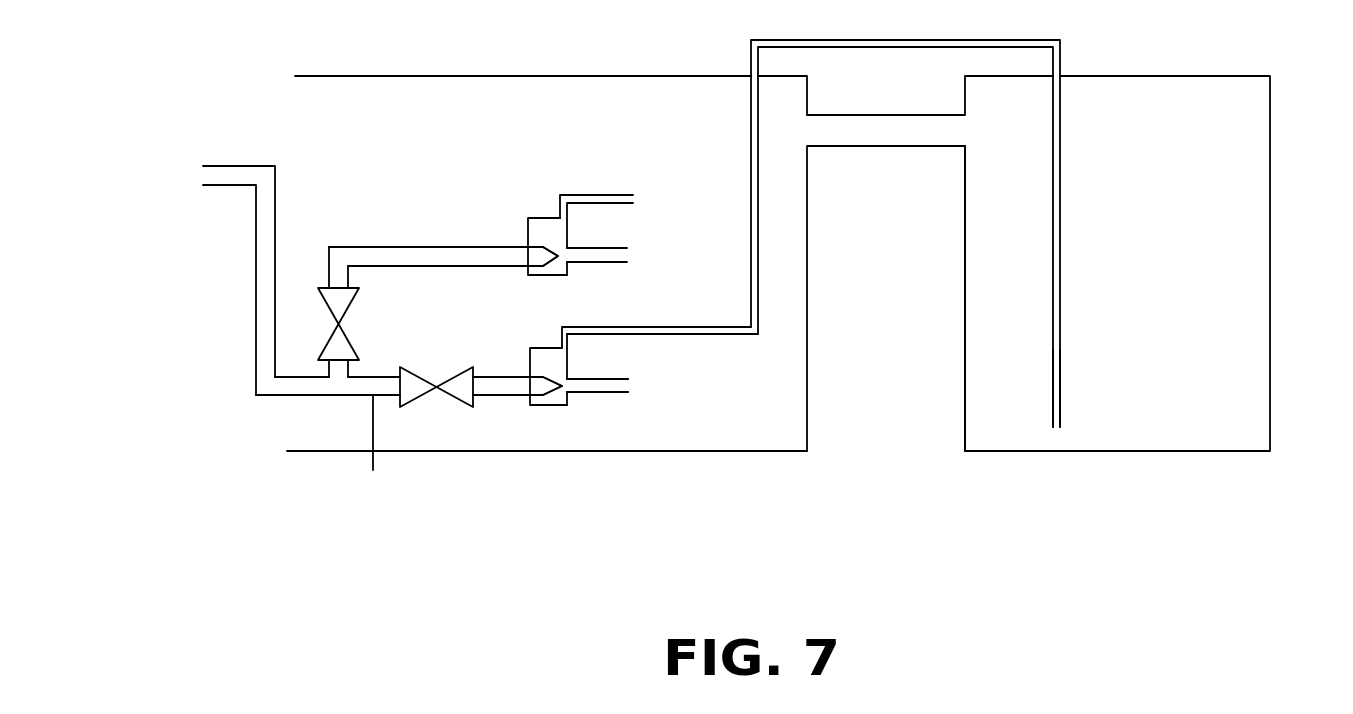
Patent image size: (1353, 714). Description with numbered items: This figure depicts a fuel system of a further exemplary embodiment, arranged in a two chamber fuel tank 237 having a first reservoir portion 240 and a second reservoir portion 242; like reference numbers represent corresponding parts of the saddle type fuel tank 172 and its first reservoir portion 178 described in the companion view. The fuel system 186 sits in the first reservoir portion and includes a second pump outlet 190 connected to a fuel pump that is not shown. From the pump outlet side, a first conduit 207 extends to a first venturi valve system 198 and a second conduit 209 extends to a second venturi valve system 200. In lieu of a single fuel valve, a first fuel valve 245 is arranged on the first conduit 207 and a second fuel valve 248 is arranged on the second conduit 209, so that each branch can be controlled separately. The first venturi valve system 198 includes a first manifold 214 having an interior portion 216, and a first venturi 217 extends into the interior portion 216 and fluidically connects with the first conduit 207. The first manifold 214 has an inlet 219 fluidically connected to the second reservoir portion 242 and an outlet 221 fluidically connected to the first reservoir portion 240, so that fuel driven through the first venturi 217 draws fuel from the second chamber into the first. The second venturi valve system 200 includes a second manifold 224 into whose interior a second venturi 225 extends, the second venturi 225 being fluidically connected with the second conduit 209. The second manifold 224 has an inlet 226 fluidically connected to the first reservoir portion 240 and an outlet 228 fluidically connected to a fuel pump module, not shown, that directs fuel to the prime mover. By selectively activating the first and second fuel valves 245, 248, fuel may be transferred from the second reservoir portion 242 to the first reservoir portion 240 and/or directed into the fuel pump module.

The saddle type fuel tank 172 is at (1078, 480).
The first reservoir portion 178 is at (383, 433).
The fuel system 186 is at (347, 418).
The second pump outlet 190 is at (232, 172).
The first venturi valve system 198 is at (591, 420).
The second venturi valve system 200 is at (599, 237).
The first conduit 207 is at (373, 470).
The second conduit 209 is at (453, 258).
The first manifold 214 is at (569, 406).
The interior portion 216 is at (530, 356).
The first venturi 217 is at (560, 387).
The inlet 219 is at (608, 335).
The outlet 221 is at (617, 393).
The second manifold 224 is at (528, 230).
The second venturi 225 is at (559, 268).
The inlet 226 is at (597, 195).
The outlet 228 is at (600, 248).
The two chamber fuel tank 237 is at (899, 497).
The first reservoir portion 240 is at (782, 325).
The second reservoir portion 242 is at (1022, 428).
The first fuel valve 245 is at (449, 388).
The second fuel valve 248 is at (340, 318).